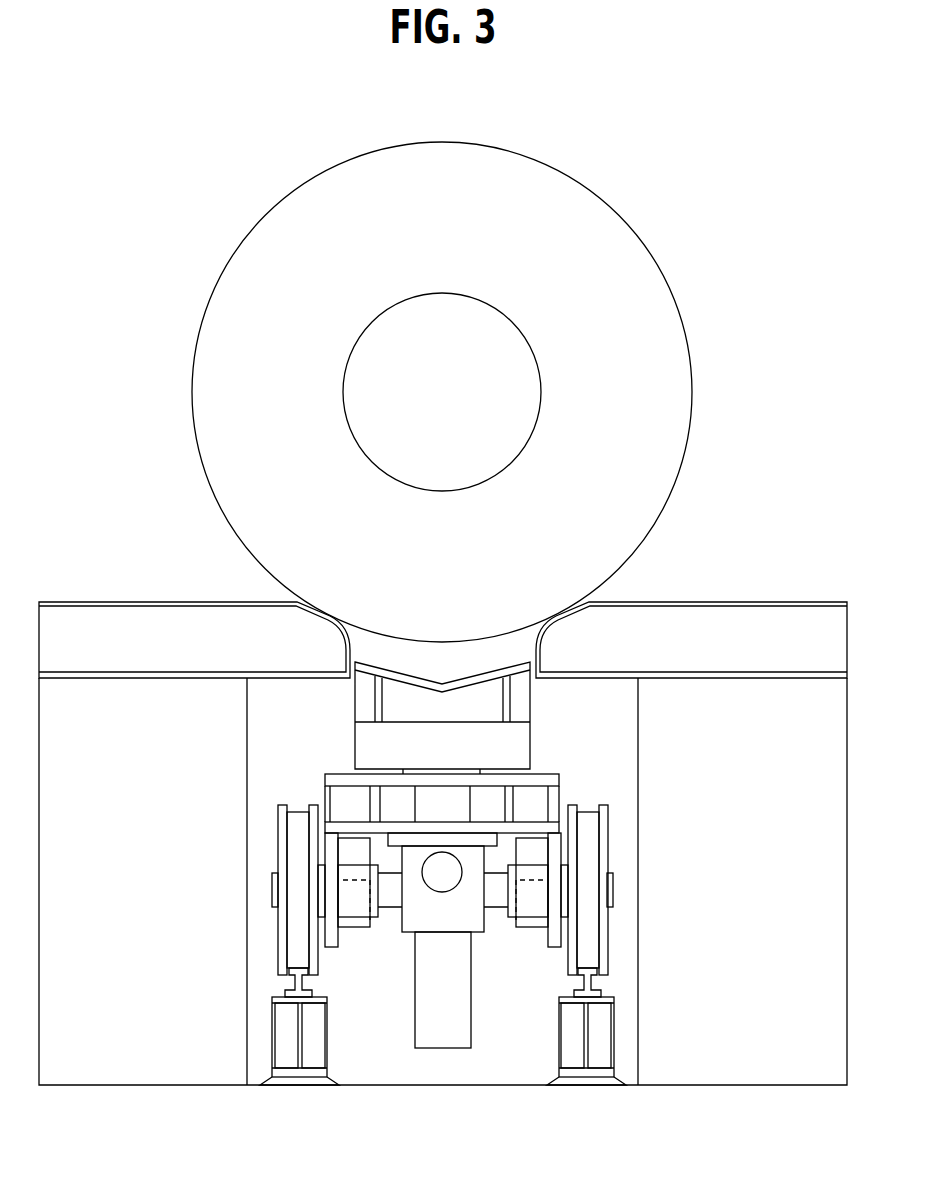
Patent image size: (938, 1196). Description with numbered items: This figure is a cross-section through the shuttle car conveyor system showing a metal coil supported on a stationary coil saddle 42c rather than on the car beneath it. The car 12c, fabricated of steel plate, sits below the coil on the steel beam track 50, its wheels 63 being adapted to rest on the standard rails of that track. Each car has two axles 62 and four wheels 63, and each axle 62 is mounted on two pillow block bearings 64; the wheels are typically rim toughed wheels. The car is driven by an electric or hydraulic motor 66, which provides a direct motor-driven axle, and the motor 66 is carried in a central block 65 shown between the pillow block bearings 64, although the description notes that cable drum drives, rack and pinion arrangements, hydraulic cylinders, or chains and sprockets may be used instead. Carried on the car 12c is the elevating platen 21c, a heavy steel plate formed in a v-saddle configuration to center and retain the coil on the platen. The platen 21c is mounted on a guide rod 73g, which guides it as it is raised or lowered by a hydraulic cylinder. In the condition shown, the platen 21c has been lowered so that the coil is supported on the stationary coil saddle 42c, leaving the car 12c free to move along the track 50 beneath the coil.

The coil saddle 42c is at (694, 602).
The car 12c is at (493, 772).
The elevating platen 21c is at (370, 742).
The wheel 63 is at (608, 818).
The axle 62 is at (613, 900).
The pillow block bearing 64 is at (350, 928).
The holder block 65 is at (467, 915).
The motor 66 is at (430, 880).
The track 50 is at (327, 1025).
The guide rod 73g is at (450, 1030).